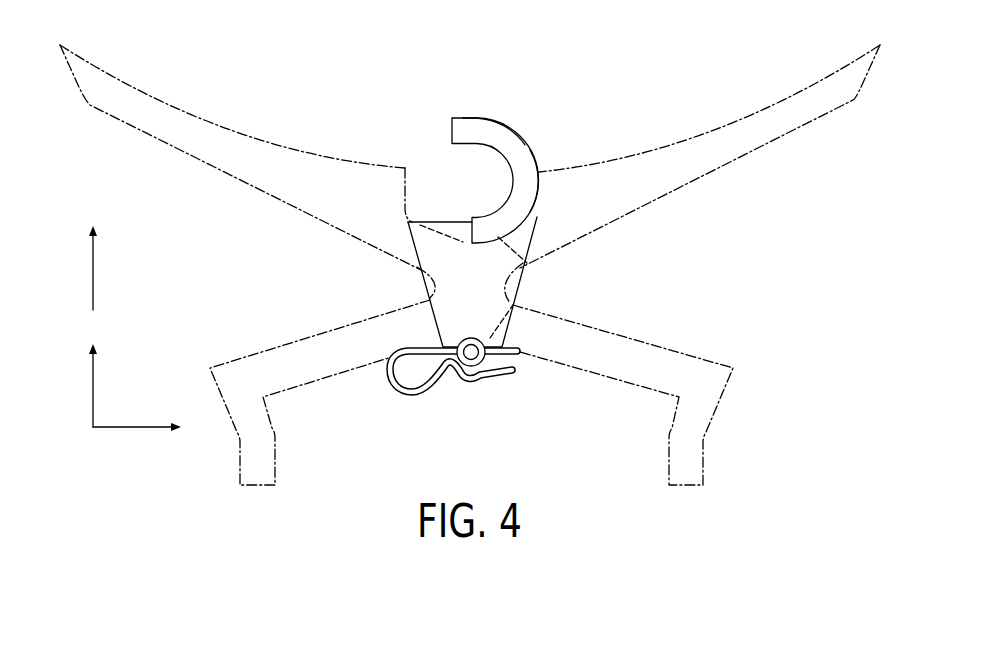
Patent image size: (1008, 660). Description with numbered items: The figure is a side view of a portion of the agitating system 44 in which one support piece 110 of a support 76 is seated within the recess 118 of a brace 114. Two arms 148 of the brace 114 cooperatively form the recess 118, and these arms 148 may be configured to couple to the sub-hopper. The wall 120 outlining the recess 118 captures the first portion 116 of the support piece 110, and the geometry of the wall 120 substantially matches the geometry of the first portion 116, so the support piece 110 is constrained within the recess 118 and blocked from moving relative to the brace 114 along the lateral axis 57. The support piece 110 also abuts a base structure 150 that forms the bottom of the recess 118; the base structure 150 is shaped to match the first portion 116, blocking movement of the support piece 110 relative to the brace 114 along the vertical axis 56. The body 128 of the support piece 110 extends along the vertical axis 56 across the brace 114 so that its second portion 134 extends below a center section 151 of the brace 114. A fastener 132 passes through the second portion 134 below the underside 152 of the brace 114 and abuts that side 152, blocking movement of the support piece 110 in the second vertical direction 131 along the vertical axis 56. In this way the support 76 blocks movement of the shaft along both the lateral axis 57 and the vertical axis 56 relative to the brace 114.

The agitating system 44 is at (470, 242).
The vertical axis 56 is at (92, 392).
The lateral axis 57 is at (130, 430).
The support 76 is at (462, 184).
The support piece 110 is at (528, 132).
The brace 114 is at (750, 68).
The first portion 116 is at (512, 137).
The recess 118 is at (418, 165).
The wall 120 is at (540, 183).
The body 128 is at (462, 282).
The second vertical direction 131 is at (92, 275).
The fastener 132 is at (454, 382).
The second portion 134 is at (482, 382).
The arms 148 is at (190, 117).
The base structure 150 is at (527, 263).
The center section 151 is at (430, 302).
The side 152 is at (513, 305).